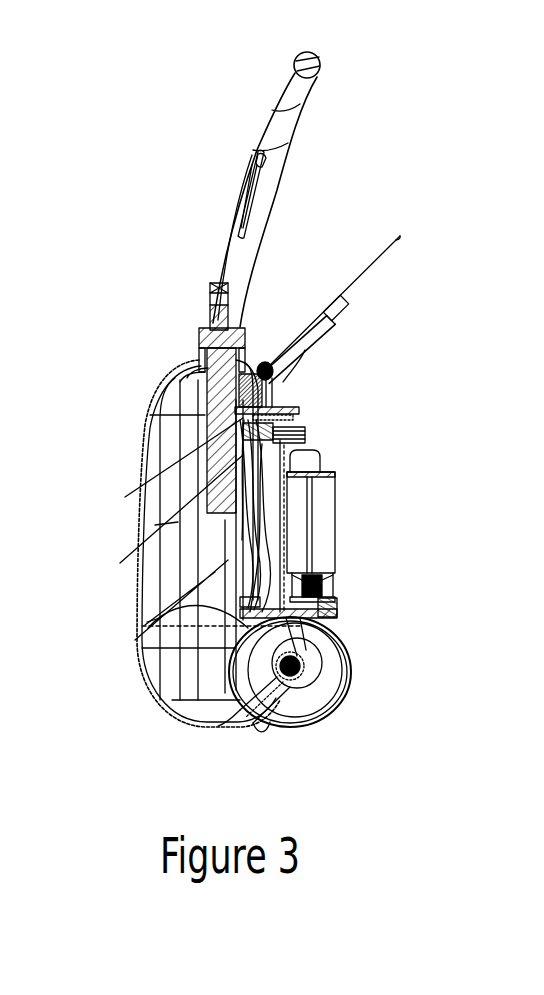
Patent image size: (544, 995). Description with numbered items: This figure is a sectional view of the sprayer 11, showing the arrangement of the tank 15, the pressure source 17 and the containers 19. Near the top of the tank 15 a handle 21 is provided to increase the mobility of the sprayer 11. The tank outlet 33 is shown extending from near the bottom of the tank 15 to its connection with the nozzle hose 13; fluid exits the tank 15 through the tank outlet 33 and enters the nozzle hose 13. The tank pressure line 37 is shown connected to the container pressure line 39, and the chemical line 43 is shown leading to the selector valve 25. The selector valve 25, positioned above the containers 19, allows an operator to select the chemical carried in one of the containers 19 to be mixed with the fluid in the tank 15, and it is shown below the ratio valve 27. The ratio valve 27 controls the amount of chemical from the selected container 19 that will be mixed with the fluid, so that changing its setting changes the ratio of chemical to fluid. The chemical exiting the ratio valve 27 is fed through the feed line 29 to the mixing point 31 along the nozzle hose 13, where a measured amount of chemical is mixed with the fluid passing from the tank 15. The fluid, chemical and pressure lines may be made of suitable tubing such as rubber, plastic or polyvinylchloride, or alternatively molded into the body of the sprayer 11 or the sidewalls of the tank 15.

The sprayer 11 is at (110, 272).
The nozzle hose 13 is at (347, 292).
The tank 15 is at (140, 460).
The pressure source 17 is at (178, 399).
The containers 19 is at (338, 474).
The handle 21 is at (321, 58).
The selector valve 25 is at (307, 429).
The ratio valve 27 is at (299, 409).
The feed line 29 is at (308, 354).
The mixing point 31 is at (345, 318).
The tank outlet 33 is at (147, 622).
The tank pressure line 37 is at (178, 522).
The container pressure line 39 is at (270, 722).
The chemical line 43 is at (265, 572).